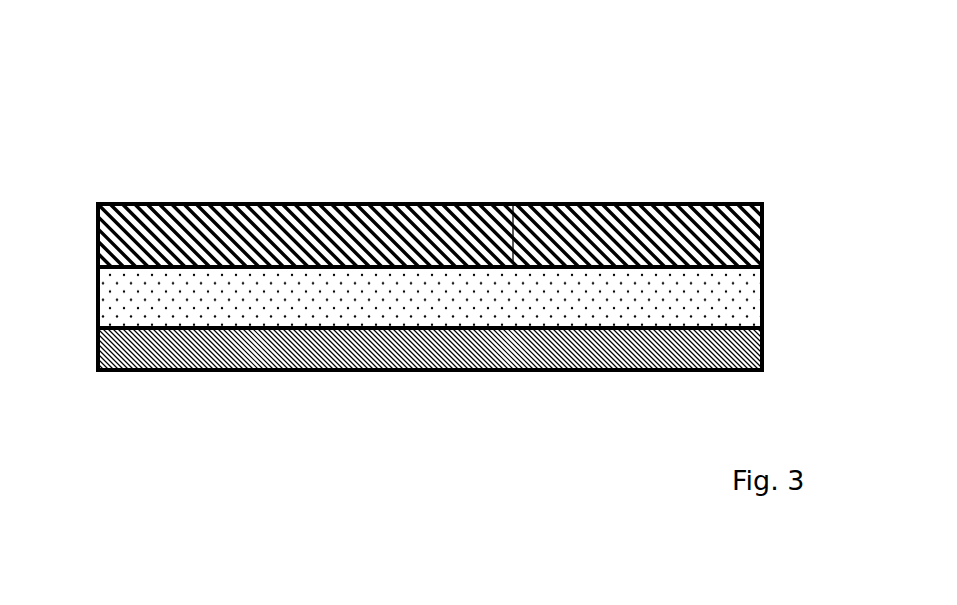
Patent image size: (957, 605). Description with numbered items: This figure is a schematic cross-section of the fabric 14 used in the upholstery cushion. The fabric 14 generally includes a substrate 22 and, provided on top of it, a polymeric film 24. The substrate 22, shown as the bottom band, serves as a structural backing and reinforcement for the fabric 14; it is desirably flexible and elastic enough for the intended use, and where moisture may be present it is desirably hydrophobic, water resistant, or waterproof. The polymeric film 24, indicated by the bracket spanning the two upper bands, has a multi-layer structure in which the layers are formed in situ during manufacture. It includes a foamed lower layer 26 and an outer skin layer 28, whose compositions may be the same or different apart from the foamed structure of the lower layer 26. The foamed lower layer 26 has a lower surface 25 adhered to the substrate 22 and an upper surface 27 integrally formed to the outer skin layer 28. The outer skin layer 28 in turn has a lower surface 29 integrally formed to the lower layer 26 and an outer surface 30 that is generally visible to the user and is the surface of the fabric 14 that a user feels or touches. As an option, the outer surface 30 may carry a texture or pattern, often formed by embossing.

The fabric 14 is at (136, 64).
The outer surface 30 is at (390, 200).
The outer skin layer 28 is at (117, 232).
The lower surface 29 is at (513, 207).
The foamed lower layer 26 is at (115, 287).
The upper surface 27 is at (713, 268).
The lower surface 25 is at (693, 325).
The polymeric film 24 is at (827, 205).
The substrate 22 is at (348, 357).